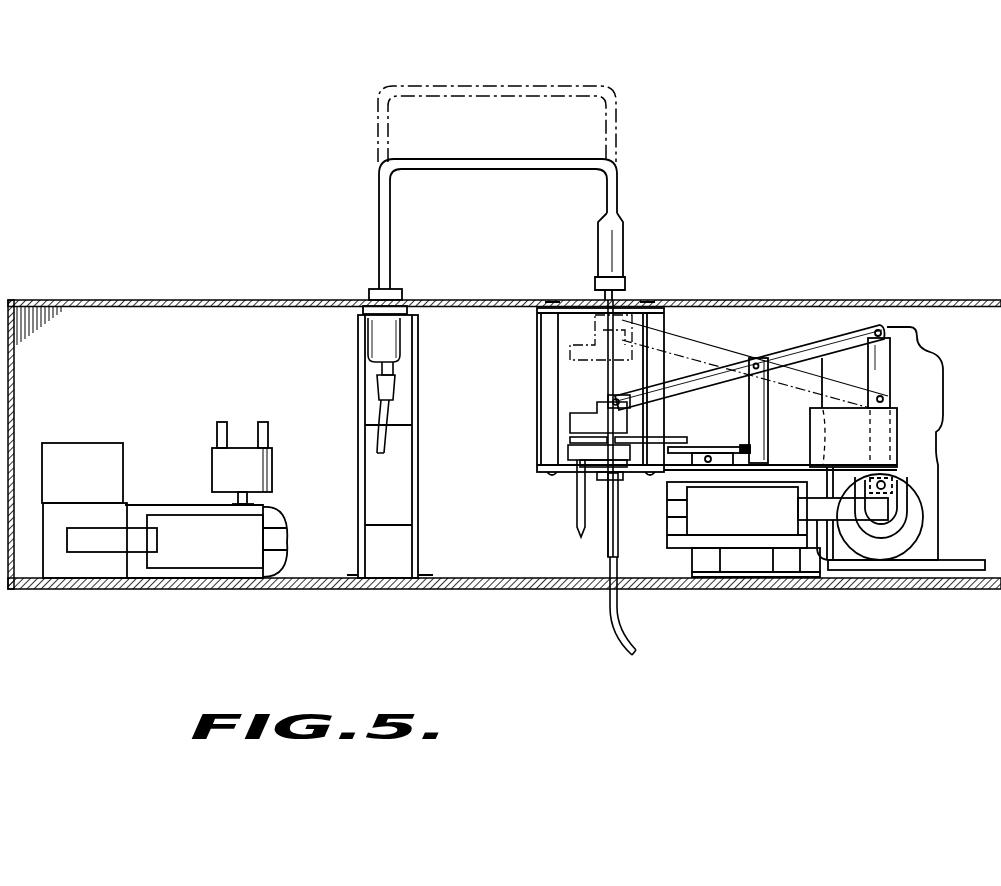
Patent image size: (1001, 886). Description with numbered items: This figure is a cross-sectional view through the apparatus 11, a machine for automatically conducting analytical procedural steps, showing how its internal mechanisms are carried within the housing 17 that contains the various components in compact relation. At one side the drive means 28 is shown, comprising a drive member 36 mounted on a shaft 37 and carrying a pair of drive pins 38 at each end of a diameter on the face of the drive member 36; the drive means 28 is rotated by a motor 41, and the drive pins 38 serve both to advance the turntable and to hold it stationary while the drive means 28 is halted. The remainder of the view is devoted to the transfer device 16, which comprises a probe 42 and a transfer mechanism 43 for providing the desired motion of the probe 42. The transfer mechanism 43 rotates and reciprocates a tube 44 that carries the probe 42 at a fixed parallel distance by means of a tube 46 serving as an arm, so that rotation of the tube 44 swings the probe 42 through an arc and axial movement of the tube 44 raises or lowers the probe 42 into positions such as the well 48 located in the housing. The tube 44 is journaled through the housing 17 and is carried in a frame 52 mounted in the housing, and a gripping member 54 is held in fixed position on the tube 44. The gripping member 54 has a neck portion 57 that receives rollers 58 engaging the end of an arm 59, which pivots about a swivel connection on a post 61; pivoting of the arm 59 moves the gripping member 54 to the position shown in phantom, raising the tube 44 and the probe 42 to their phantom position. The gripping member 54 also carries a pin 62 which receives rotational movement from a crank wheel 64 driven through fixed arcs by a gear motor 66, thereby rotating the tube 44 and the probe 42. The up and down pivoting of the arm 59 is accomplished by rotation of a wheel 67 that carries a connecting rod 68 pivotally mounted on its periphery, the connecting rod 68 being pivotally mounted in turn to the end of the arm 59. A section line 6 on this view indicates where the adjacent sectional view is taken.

The apparatus 11 is at (86, 266).
The transfer device 16 is at (662, 236).
The housing 17 is at (232, 300).
The drive means 28 is at (203, 440).
The drive member 36 is at (217, 463).
The shaft 37 is at (252, 498).
The drive pins 38 is at (227, 420).
The motor 41 is at (200, 557).
The probe 42 is at (391, 256).
The transfer mechanism 43 is at (528, 383).
The tube 44 is at (618, 199).
The tube 46 is at (491, 170).
The well 48 is at (386, 360).
The frame 52 is at (540, 470).
The gripping member 54 is at (588, 424).
The neck portion 57 is at (592, 398).
The rollers 58 is at (613, 398).
The arm 59 is at (690, 385).
The post 61 is at (757, 362).
The pin 62 is at (576, 505).
The crank wheel 64 is at (733, 452).
The gear motor 66 is at (737, 520).
The wheel 67 is at (920, 514).
The connecting rod 68 is at (890, 379).
The section line 6 is at (527, 418).